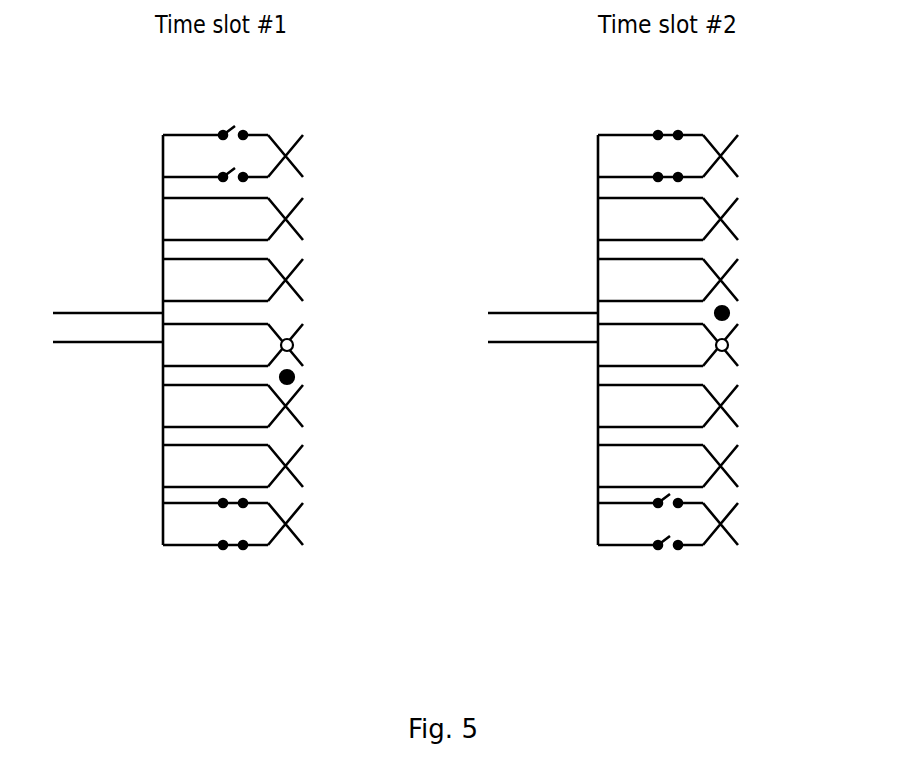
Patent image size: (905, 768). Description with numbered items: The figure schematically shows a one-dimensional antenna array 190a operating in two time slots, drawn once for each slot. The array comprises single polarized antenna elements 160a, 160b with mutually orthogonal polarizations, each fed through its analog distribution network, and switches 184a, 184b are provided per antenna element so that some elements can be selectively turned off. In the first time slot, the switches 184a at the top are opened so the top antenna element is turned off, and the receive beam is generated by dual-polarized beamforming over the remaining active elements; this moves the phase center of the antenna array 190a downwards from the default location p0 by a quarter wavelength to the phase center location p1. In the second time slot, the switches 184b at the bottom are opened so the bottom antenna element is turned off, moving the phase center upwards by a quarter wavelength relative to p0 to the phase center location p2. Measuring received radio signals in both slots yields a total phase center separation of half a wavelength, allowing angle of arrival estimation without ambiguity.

The antenna array 190a is at (178, 582).
The switch 184a is at (233, 128).
The switch 184b is at (235, 549).
The single polarized antenna element 160a is at (297, 140).
The single polarized antenna element 160b is at (293, 537).
The default phase center location p0 is at (294, 346).
The first phase center location p1 is at (294, 379).
The second phase center location p2 is at (729, 315).